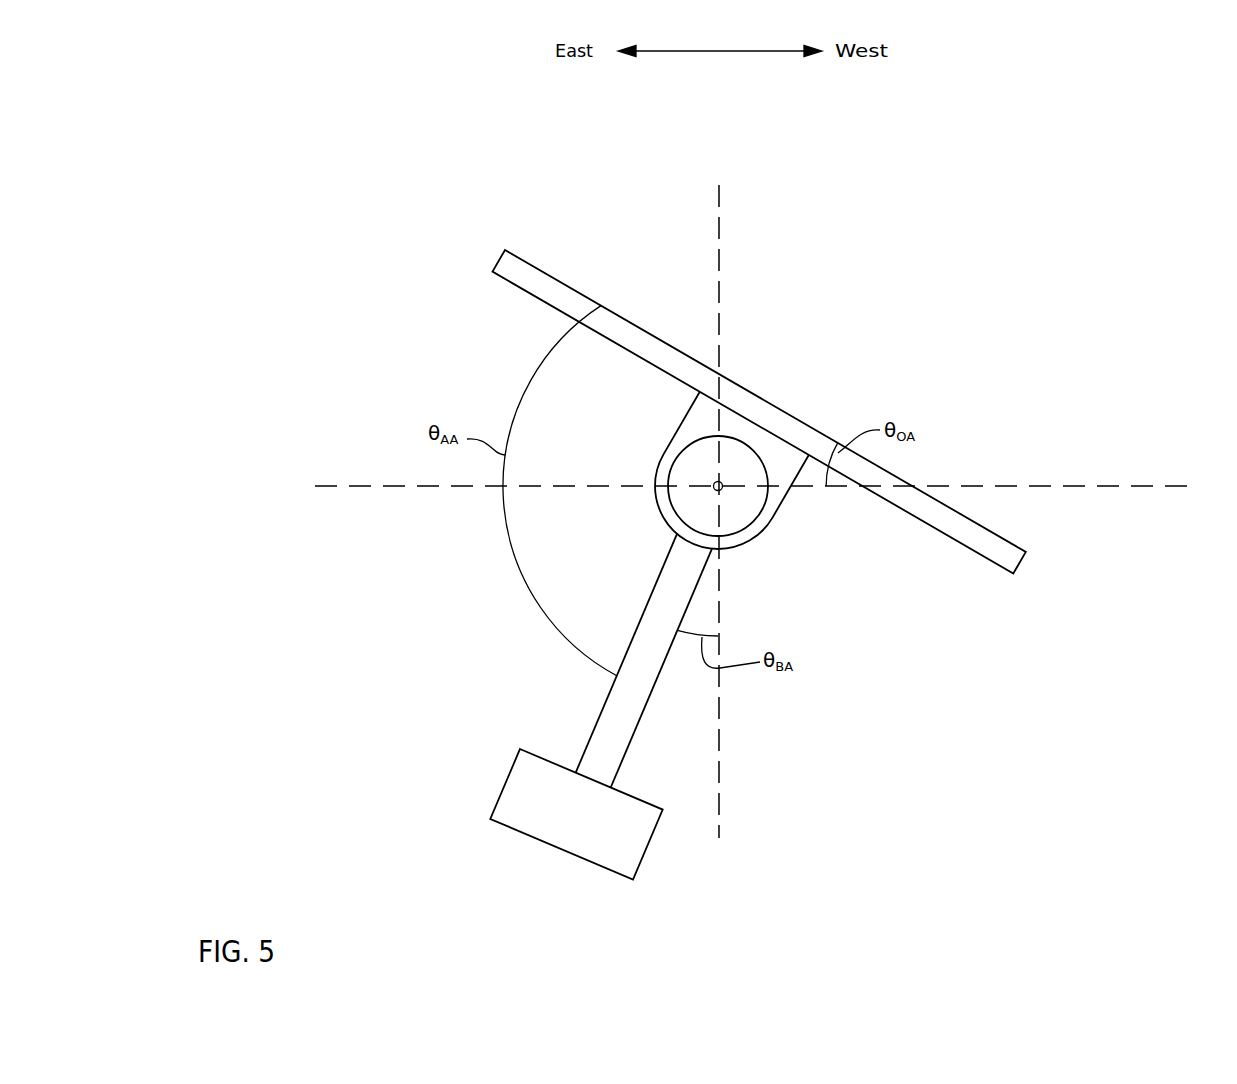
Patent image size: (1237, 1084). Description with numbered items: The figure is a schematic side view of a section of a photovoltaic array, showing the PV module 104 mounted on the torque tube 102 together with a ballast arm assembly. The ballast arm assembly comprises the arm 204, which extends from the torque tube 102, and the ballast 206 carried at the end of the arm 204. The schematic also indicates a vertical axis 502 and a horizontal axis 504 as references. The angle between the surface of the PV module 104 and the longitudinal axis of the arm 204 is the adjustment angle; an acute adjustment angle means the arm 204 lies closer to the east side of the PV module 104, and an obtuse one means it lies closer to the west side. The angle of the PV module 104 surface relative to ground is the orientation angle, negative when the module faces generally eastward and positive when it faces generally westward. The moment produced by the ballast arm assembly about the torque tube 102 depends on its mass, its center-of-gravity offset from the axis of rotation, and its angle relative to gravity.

The torque tube 102 is at (748, 527).
The PV module 104 is at (747, 385).
The arm 204 is at (588, 743).
The ballast 206 is at (650, 847).
The vertical axis 502 is at (719, 229).
The horizontal axis 504 is at (1026, 486).